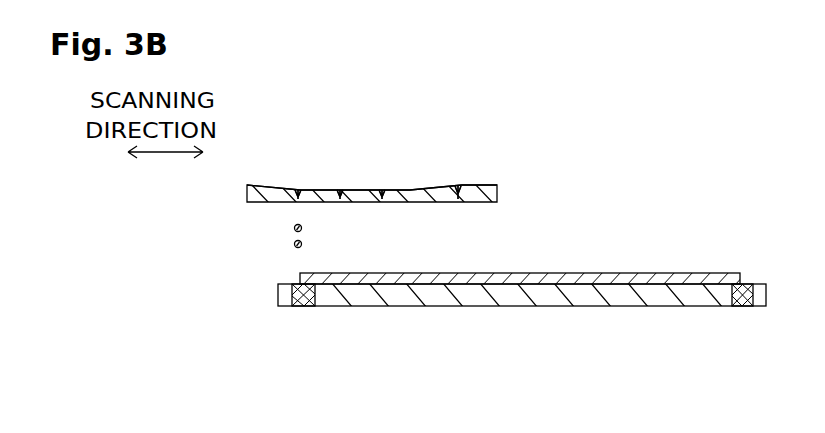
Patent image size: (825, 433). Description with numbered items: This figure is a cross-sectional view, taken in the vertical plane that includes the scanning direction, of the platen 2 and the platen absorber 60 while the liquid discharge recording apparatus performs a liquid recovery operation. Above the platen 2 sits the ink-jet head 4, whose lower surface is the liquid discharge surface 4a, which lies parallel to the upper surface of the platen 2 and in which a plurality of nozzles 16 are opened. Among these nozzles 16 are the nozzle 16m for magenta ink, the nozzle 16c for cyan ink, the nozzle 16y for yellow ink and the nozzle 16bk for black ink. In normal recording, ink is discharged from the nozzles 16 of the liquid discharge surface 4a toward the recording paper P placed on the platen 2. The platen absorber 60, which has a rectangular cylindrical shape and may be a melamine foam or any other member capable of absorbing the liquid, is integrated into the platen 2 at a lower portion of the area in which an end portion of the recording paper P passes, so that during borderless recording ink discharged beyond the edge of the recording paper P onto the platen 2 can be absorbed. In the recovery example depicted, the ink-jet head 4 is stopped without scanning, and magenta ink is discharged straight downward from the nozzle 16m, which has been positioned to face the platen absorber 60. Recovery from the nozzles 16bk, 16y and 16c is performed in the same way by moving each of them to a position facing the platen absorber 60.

The platen 2 is at (290, 292).
The ink-jet head 4 is at (520, 124).
The liquid discharge surface 4a is at (497, 189).
The nozzles 16 is at (497, 137).
The nozzle for magenta ink 16m is at (298, 188).
The nozzle for cyan ink 16c is at (340, 188).
The nozzle for yellow ink 16y is at (382, 188).
The nozzle for black ink 16bk is at (458, 186).
The platen absorber 60 is at (302, 307).
The recording paper P is at (672, 275).